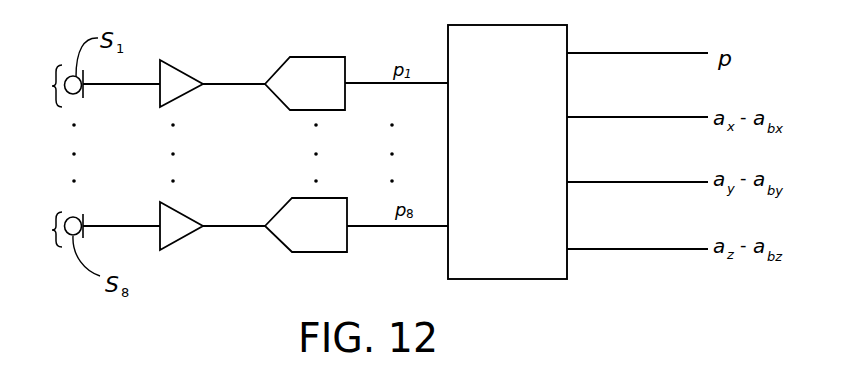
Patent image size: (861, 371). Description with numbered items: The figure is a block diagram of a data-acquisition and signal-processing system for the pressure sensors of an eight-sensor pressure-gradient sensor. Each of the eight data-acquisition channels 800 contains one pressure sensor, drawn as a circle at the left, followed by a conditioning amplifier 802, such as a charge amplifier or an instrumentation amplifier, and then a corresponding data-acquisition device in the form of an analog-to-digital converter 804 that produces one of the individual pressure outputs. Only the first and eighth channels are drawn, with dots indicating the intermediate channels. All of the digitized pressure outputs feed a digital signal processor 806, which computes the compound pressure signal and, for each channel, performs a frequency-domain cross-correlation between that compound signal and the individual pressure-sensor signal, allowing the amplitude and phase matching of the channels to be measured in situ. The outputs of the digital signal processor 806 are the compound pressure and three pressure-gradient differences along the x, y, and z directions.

The data-acquisition channels 800 is at (88, 156).
The conditioning amplifier 802 is at (175, 77).
The analog-to-digital converter 804 is at (303, 67).
The digital signal processor 806 is at (518, 142).